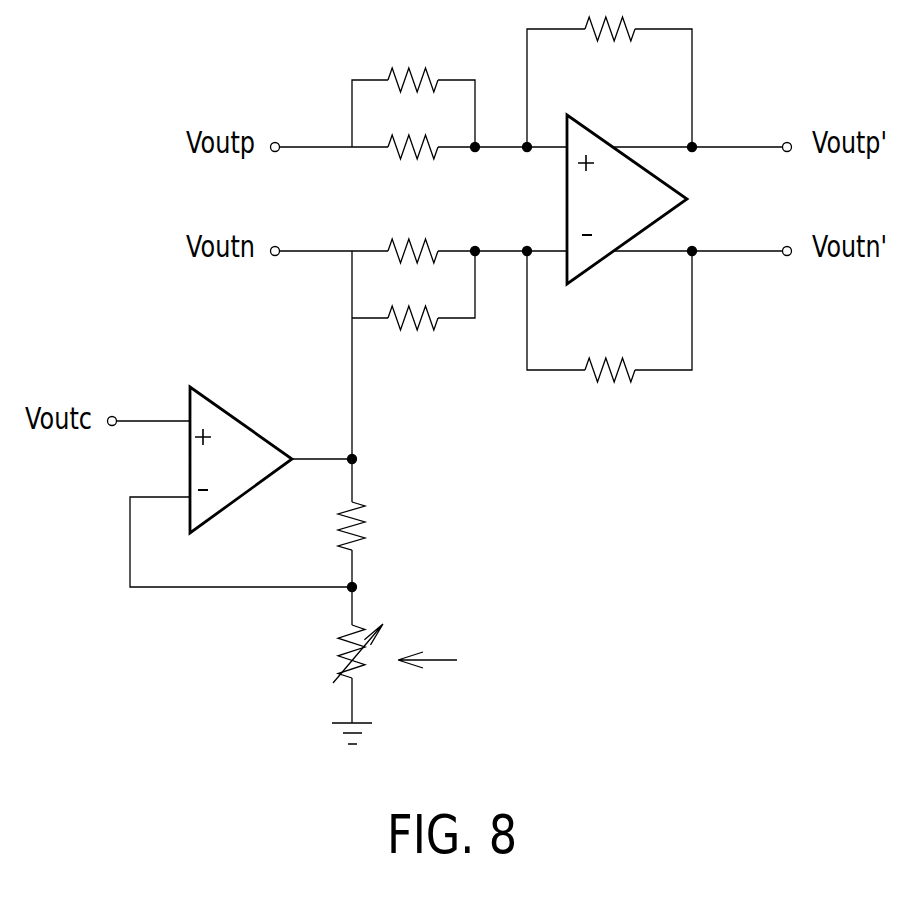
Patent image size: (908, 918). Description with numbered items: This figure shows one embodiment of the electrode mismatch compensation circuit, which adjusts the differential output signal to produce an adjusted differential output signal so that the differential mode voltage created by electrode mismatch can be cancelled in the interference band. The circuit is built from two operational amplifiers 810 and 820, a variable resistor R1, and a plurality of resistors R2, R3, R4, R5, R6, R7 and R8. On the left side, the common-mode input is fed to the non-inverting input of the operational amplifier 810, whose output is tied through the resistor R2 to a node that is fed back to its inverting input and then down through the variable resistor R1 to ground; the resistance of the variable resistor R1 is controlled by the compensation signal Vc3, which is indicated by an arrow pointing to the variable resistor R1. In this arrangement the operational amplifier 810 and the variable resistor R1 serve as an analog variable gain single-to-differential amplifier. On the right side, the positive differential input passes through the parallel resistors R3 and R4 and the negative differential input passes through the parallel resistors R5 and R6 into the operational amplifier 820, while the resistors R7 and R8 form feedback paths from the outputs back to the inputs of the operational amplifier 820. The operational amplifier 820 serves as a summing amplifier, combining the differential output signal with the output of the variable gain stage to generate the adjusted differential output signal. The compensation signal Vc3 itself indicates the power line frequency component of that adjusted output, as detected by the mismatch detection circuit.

The operational amplifier 810 is at (242, 420).
The operational amplifier 820 is at (597, 128).
The variable resistor R1 is at (339, 653).
The resistor R2 is at (372, 526).
The resistor R3 is at (413, 59).
The resistor R4 is at (420, 164).
The resistor R5 is at (411, 233).
The resistor R6 is at (413, 339).
The resistor R7 is at (610, 29).
The resistor R8 is at (610, 393).
The compensation signal Vc3 is at (451, 657).